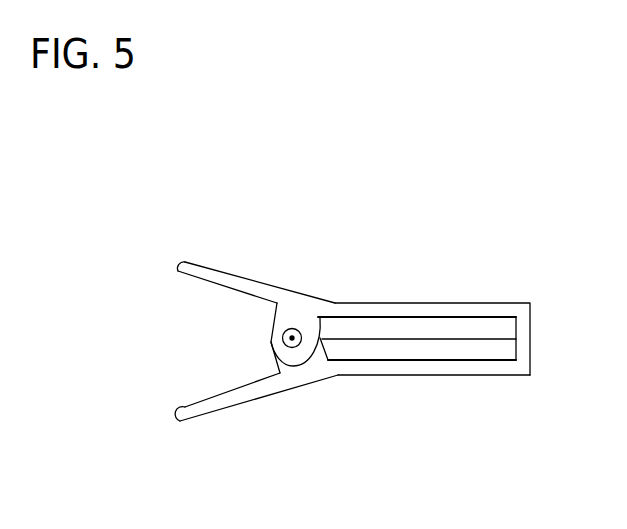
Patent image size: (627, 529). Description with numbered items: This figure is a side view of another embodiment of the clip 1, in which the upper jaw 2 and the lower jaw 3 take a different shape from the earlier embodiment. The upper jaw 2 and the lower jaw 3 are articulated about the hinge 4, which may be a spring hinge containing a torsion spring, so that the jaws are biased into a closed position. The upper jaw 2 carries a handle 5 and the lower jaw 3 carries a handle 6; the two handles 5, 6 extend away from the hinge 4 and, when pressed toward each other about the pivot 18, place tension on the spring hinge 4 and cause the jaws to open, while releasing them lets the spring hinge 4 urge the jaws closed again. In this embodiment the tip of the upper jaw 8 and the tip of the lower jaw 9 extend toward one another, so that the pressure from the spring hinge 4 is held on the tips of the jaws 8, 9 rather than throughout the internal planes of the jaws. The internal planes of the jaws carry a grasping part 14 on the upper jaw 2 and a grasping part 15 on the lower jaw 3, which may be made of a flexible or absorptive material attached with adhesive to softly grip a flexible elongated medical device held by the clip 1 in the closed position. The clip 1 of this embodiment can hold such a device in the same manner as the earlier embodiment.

The clip 1 is at (280, 287).
The upper jaw 2 is at (411, 317).
The lower jaw 3 is at (410, 363).
The hinge 4 is at (268, 342).
The handle 5 is at (229, 282).
The handle 6 is at (228, 402).
The tip of the upper jaw 8 is at (524, 322).
The tip of the lower jaw 9 is at (524, 349).
The grasping part 14 is at (493, 313).
The grasping part 15 is at (497, 363).
The pivot 18 is at (283, 334).